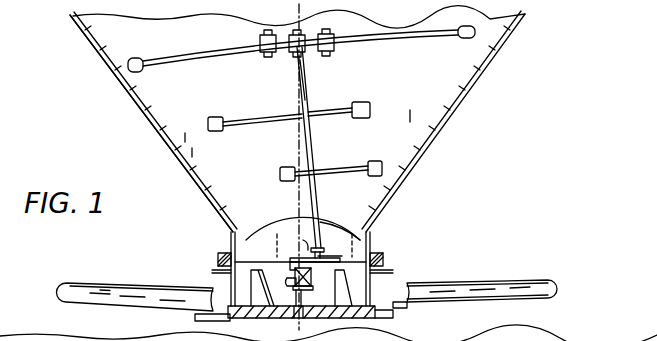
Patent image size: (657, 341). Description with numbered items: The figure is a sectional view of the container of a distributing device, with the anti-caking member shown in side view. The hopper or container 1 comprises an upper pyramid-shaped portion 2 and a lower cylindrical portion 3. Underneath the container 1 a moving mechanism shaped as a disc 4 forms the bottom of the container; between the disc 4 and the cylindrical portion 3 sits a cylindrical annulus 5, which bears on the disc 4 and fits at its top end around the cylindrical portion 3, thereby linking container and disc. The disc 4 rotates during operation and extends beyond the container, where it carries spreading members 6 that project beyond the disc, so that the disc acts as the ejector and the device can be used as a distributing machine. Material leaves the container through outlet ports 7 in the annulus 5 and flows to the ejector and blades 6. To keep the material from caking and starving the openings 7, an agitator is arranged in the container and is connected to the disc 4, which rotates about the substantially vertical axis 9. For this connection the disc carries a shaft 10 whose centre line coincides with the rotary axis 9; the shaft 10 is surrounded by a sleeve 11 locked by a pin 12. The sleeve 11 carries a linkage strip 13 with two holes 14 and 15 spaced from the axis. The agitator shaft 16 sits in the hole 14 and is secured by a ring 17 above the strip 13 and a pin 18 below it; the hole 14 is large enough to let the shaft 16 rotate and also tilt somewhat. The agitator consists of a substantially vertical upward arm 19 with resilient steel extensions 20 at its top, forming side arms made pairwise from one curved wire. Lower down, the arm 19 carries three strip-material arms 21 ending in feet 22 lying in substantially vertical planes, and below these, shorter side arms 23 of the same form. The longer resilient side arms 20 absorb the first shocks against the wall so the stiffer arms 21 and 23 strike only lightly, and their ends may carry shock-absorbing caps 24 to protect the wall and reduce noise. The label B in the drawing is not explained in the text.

The hopper or container 1 is at (423, 172).
The pyramid-shaped portion 2 is at (449, 126).
The cylindrical portion 3 is at (372, 241).
The disc 4 is at (380, 311).
The cylindrical annulus 5 is at (213, 285).
The spreading members 6 is at (87, 291).
The outlet ports 7 is at (256, 279).
The vertical axis 9 is at (302, 208).
The shaft 10 is at (298, 306).
The sleeve 11 is at (303, 312).
The pin 12 is at (292, 279).
The strip 13 is at (288, 259).
The hole 14 is at (302, 247).
The hole 15 is at (338, 234).
The shaft 16 is at (341, 262).
The ring 17 is at (311, 243).
The pin 18 is at (312, 277).
The upward arm 19 is at (298, 66).
The extensions 20 is at (167, 58).
The arms 21 is at (244, 121).
The feet 22 is at (372, 107).
The side arms 23 is at (337, 176).
The caps 24 is at (465, 40).
The shaft axis B is at (313, 89).